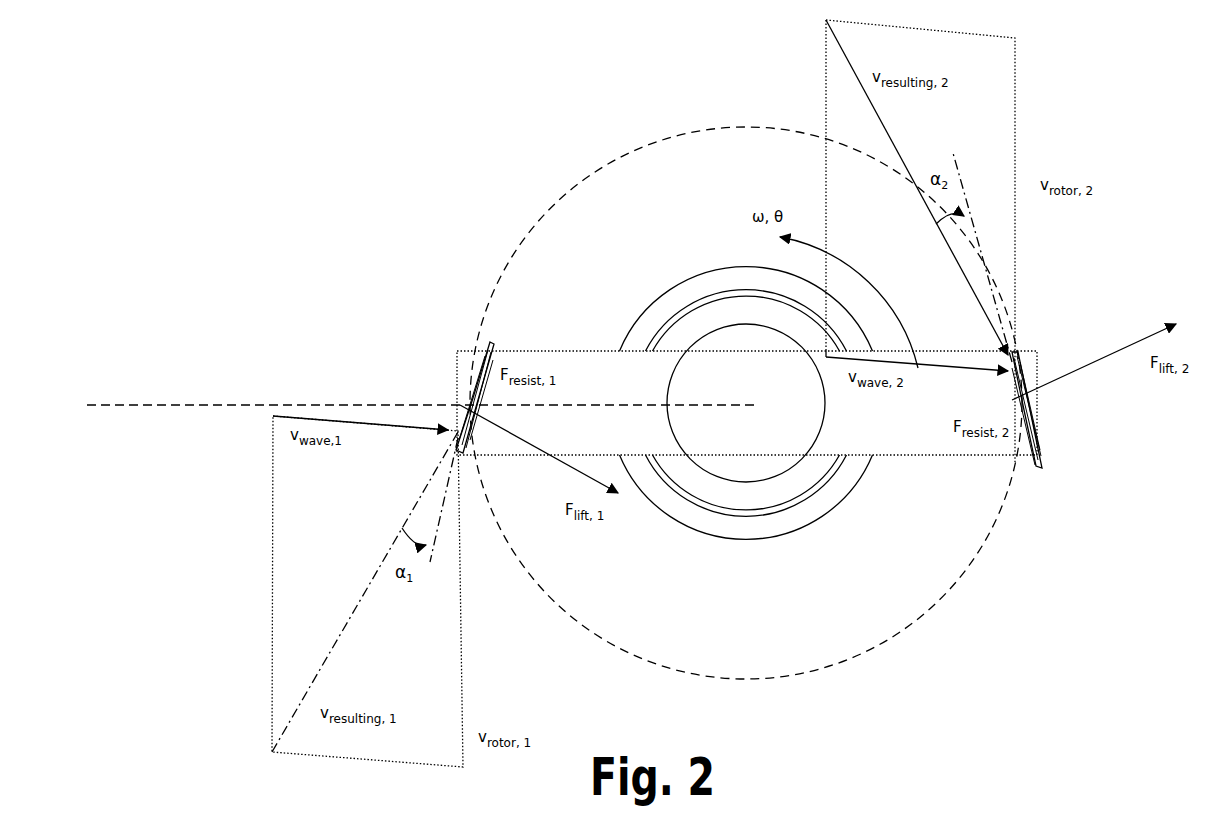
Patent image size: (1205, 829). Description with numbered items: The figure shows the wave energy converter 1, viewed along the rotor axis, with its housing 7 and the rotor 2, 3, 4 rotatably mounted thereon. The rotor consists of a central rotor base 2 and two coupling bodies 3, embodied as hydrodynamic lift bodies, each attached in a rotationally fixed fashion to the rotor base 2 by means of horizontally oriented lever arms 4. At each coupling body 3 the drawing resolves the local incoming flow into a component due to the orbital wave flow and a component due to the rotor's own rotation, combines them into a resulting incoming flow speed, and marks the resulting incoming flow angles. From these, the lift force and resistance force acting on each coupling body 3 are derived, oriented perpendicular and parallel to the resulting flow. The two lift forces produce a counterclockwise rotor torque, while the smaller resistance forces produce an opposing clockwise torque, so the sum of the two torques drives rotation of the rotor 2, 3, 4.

The wave energy converter 1 is at (515, 150).
The rotor base 2 is at (687, 333).
The coupling bodies 3 is at (470, 378).
The lever arms 4 is at (747, 402).
The housing 7 is at (718, 282).